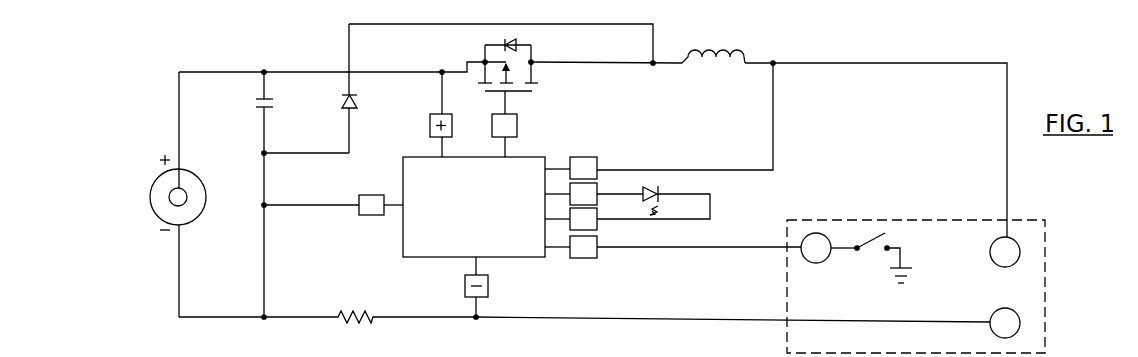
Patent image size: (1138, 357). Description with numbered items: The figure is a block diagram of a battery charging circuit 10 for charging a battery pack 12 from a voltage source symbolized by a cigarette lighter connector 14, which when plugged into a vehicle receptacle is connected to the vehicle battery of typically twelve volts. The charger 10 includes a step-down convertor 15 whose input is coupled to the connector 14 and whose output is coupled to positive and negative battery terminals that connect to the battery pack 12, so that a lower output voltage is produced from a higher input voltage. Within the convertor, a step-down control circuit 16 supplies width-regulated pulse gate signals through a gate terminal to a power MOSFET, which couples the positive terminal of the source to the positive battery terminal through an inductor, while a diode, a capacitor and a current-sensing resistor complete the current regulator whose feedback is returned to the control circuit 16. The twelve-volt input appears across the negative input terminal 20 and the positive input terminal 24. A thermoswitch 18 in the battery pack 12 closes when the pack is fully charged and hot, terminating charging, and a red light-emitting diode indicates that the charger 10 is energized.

The battery charging circuit 10 is at (670, 50).
The battery pack 12 is at (1028, 219).
The cigarette lighter connector 14 is at (151, 193).
The step-down convertor 15 is at (479, 127).
The step-down control circuit 16 is at (402, 236).
The thermoswitch 18 is at (897, 240).
The negative input terminal 20 is at (497, 281).
The positive input terminal 24 is at (430, 122).